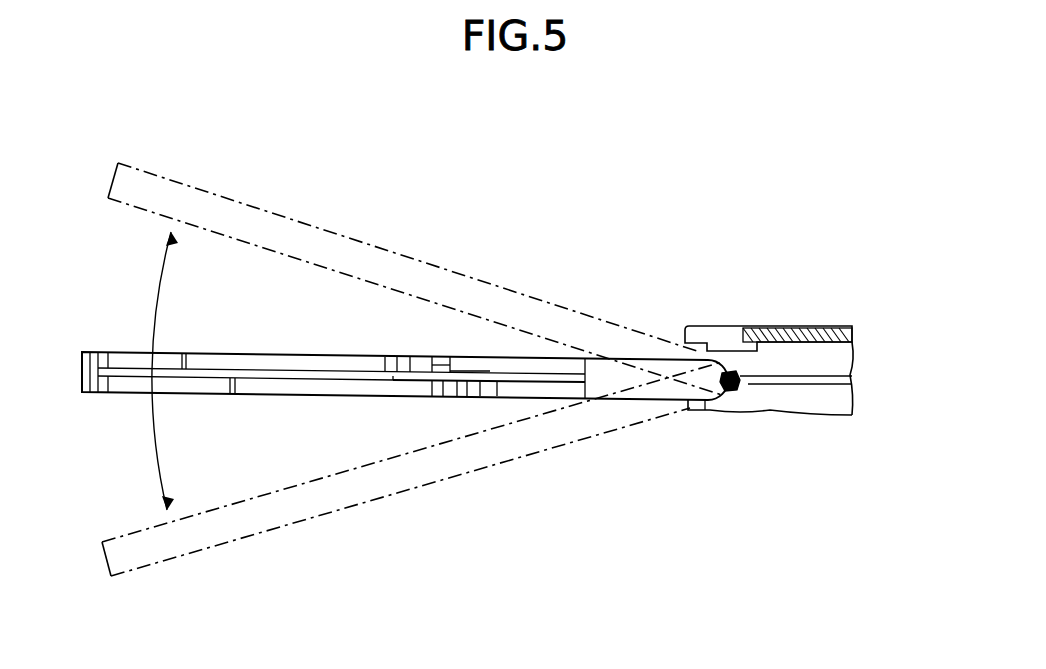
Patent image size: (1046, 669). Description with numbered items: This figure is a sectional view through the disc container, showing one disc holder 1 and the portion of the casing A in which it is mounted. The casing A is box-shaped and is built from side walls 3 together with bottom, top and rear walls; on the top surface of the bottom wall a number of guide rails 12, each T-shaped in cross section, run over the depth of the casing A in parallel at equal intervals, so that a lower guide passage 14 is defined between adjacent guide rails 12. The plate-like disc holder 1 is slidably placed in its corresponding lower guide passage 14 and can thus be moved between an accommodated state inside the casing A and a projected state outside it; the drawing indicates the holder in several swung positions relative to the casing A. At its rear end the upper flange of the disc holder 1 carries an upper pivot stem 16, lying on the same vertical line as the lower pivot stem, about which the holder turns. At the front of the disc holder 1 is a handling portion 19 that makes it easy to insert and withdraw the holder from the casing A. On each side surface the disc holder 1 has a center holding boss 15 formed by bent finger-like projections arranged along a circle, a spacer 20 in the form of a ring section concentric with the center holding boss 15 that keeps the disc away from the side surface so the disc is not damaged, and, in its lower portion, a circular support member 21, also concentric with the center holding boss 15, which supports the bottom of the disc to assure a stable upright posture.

The disc holder 1 is at (343, 226).
The side wall 3 is at (773, 326).
The guide rail 12 is at (838, 404).
The lower guide passage 14 is at (807, 384).
The center holding boss 15 is at (393, 357).
The upper pivot stem 16 is at (735, 396).
The handling portion 19 is at (82, 352).
The spacer 20 is at (546, 390).
The circular support member 21 is at (252, 358).
The casing A is at (843, 318).